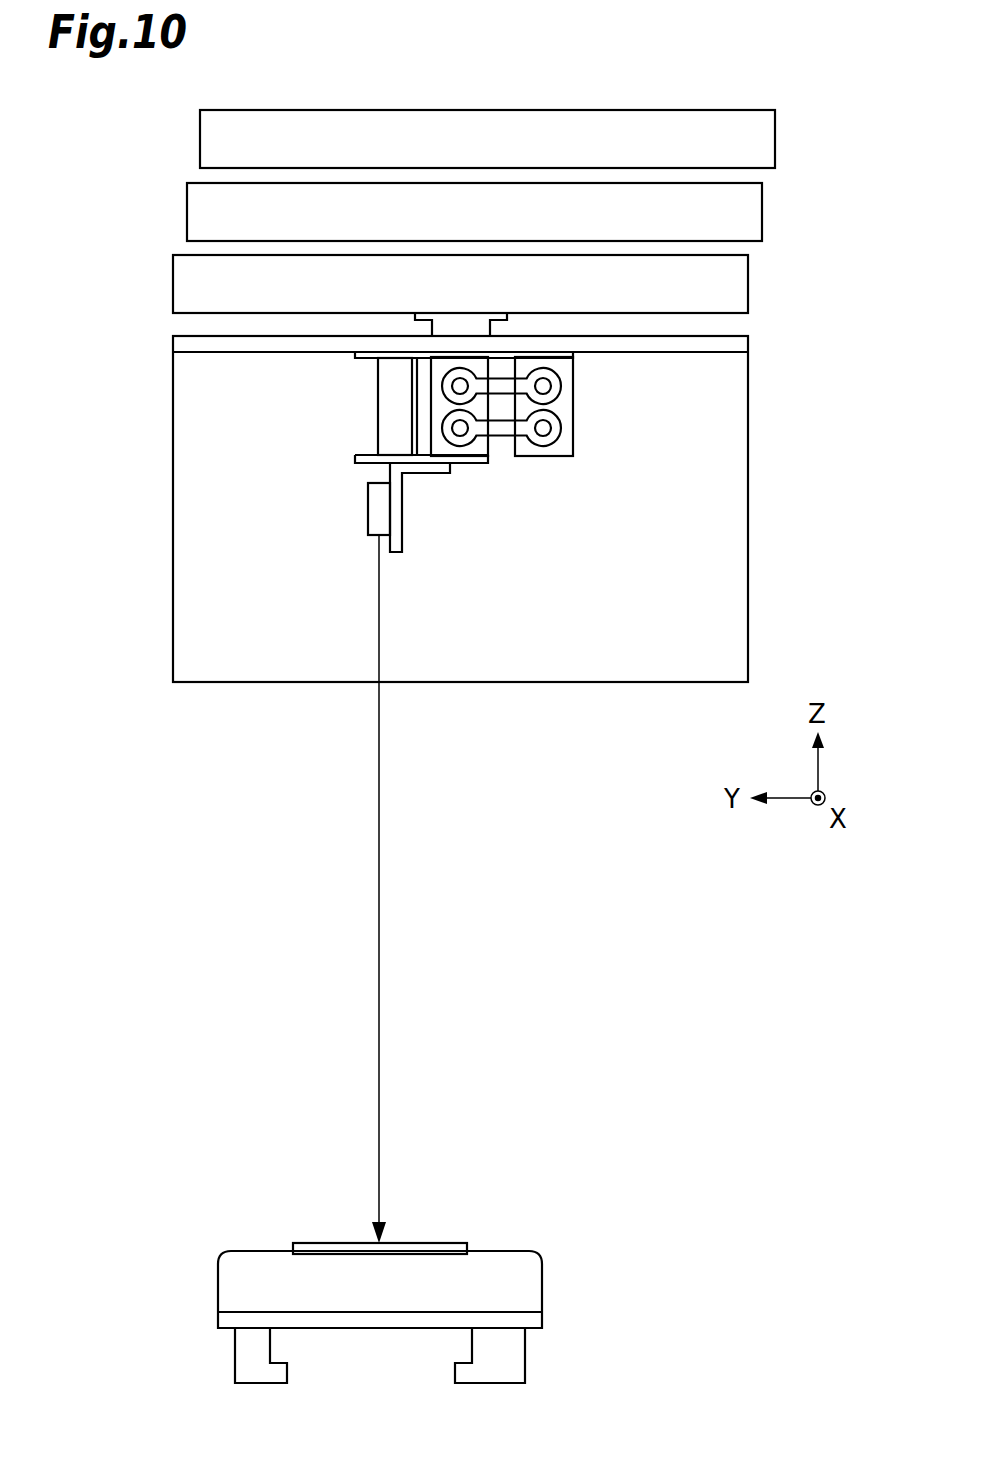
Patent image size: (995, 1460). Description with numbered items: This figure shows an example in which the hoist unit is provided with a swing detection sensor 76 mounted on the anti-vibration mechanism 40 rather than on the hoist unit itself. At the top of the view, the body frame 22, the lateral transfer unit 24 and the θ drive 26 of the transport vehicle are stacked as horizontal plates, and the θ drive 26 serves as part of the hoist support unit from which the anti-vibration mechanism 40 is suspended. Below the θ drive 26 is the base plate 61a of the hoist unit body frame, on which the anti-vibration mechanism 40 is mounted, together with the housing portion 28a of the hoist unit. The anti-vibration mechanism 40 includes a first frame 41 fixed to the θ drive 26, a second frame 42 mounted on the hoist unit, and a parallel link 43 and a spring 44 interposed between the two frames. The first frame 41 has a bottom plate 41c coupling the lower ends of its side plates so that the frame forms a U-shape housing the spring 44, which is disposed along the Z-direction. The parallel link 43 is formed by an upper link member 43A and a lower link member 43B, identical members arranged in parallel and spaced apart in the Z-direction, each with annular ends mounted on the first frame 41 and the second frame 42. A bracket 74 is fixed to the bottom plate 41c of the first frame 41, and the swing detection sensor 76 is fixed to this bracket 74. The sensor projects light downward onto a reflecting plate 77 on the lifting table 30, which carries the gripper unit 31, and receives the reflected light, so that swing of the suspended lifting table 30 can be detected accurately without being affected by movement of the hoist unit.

The body frame 22 is at (765, 134).
The lateral transfer unit 24 is at (745, 207).
The θ drive 26 is at (730, 283).
The housing 28a is at (752, 432).
The base plate 61a is at (740, 342).
The anti-vibration mechanism 40 is at (330, 492).
The spring 44 is at (368, 413).
The first frame 41 is at (464, 445).
The bottom plate 41c is at (470, 466).
The second frame 42 is at (582, 449).
The parallel link 43 is at (566, 407).
The upper link member 43A is at (561, 386).
The lower link member 43B is at (561, 427).
The bracket 74 is at (404, 530).
The swing detection sensor 76 is at (367, 515).
The reflecting plate 77 is at (262, 1250).
The lifting table 30 is at (500, 1250).
The gripper unit 31 is at (527, 1359).